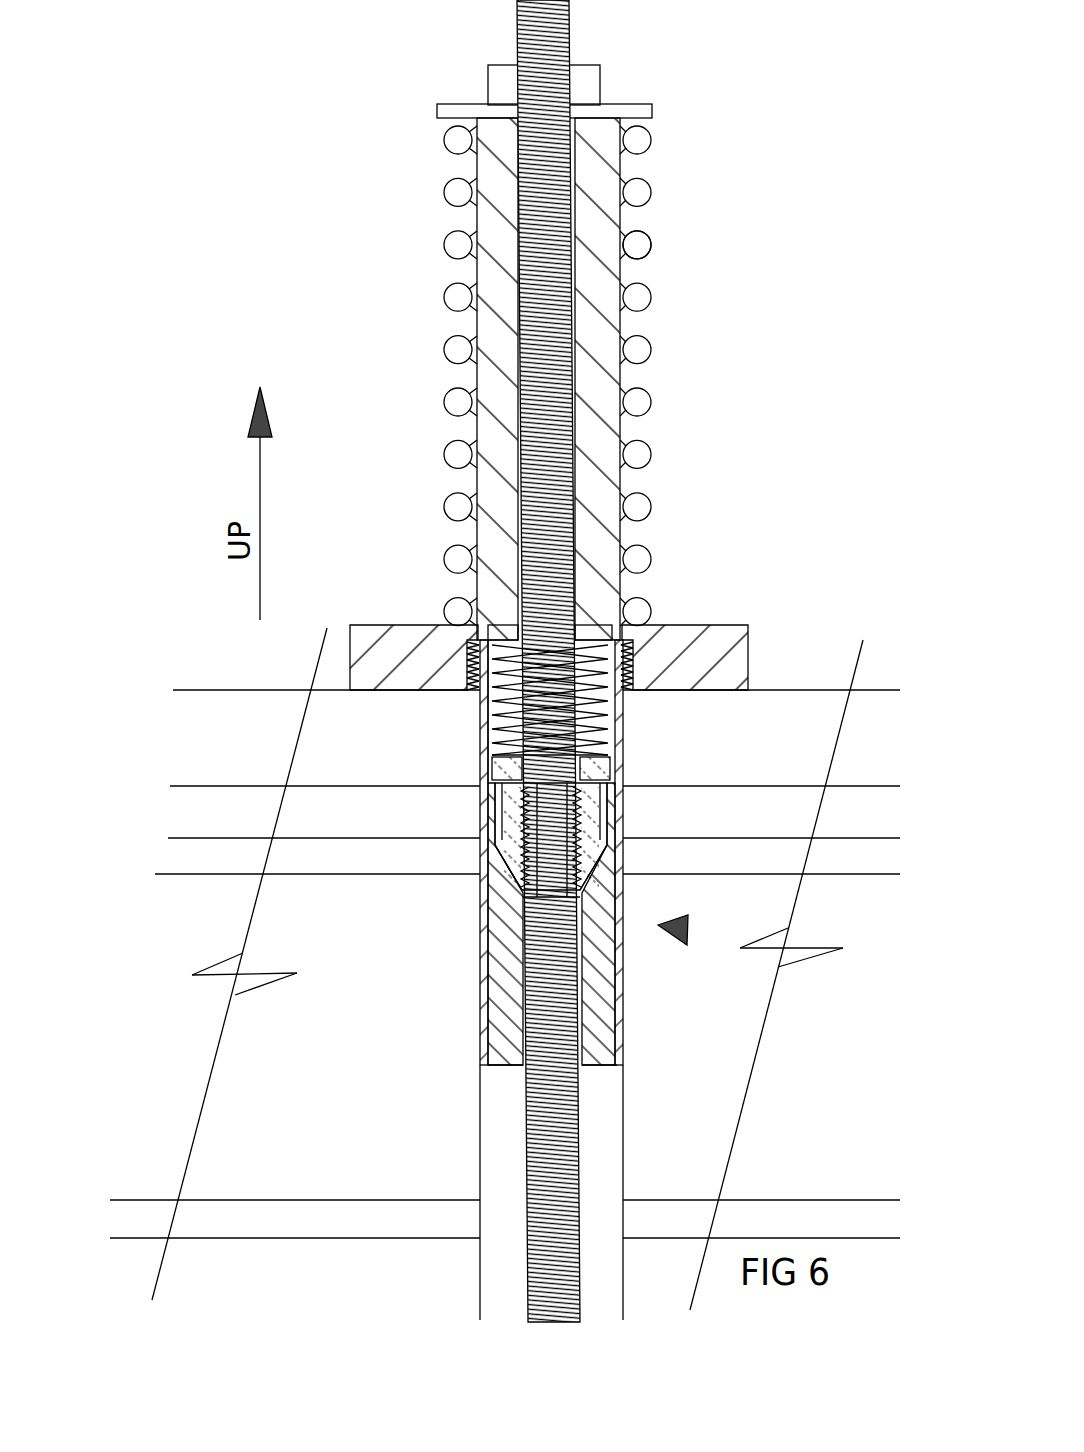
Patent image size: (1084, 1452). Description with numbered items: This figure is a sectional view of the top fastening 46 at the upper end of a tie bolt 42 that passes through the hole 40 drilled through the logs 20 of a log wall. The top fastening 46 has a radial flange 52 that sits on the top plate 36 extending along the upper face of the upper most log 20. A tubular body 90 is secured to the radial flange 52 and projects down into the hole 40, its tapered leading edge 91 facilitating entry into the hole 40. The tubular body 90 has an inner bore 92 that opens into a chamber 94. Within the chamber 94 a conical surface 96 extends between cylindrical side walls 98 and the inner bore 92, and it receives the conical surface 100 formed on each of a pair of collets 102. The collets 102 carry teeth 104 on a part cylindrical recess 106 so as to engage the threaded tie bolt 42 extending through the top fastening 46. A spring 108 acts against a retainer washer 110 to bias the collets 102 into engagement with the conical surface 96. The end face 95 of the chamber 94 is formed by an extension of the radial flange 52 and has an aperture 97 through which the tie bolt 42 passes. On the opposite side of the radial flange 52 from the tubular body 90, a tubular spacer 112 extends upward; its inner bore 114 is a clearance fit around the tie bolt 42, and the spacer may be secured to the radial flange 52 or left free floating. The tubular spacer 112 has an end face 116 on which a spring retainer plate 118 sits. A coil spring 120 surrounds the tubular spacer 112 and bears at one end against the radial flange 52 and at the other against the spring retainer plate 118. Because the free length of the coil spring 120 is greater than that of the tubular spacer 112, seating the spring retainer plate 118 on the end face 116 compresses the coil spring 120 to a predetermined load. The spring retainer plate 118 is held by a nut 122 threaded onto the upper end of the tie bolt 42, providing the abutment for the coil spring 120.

The log 20 is at (241, 964).
The top plate 36 is at (761, 752).
The hole 40 is at (625, 1106).
The tie bolt 42 is at (545, 490).
The top fastening 46 is at (688, 928).
The radial flange 52 is at (708, 640).
The tubular body 90 is at (605, 978).
The tapered leading edge 91 is at (490, 1058).
The inner bore 92 is at (548, 993).
The chamber 94 is at (595, 725).
The end face 95 is at (490, 630).
The conical surface 96 is at (603, 905).
The aperture 97 is at (590, 637).
The cylindrical side walls 98 is at (612, 820).
The conical surface 100 is at (522, 865).
The collets 102 is at (592, 848).
The teeth 104 is at (537, 803).
The part cylindrical recess 106 is at (580, 826).
The spring 108 is at (505, 715).
The retainer washer 110 is at (492, 768).
The tubular spacer 112 is at (495, 362).
The inner bore 114 is at (572, 320).
The end face 116 is at (618, 125).
The spring retainer plate 118 is at (452, 113).
The coil spring 120 is at (642, 243).
The nut 122 is at (600, 82).